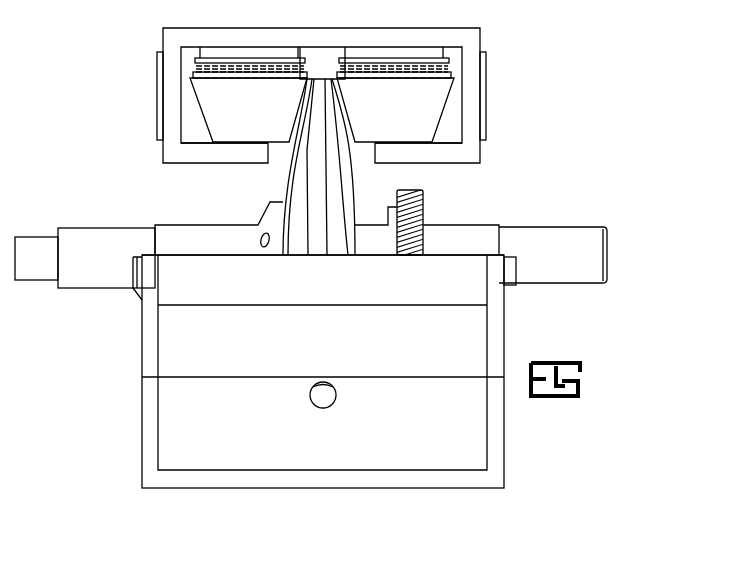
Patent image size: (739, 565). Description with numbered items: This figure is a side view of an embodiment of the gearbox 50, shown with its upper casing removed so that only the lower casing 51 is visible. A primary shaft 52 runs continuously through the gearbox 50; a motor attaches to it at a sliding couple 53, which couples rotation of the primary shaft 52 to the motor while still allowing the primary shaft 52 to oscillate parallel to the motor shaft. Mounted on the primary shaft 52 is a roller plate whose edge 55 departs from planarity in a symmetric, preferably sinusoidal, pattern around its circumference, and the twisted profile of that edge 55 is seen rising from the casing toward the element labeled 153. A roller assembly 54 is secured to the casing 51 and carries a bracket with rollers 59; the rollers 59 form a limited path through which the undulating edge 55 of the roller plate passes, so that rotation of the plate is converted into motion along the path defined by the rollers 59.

The gearbox 50 is at (540, 126).
The lower casing 51 is at (140, 343).
The primary shaft 52 is at (562, 235).
The sliding couple 53 is at (40, 237).
The roller assembly 54 is at (445, 25).
The edge 55 is at (306, 173).
The rollers 59 is at (262, 114).
The twisted belt portion 153 is at (338, 196).